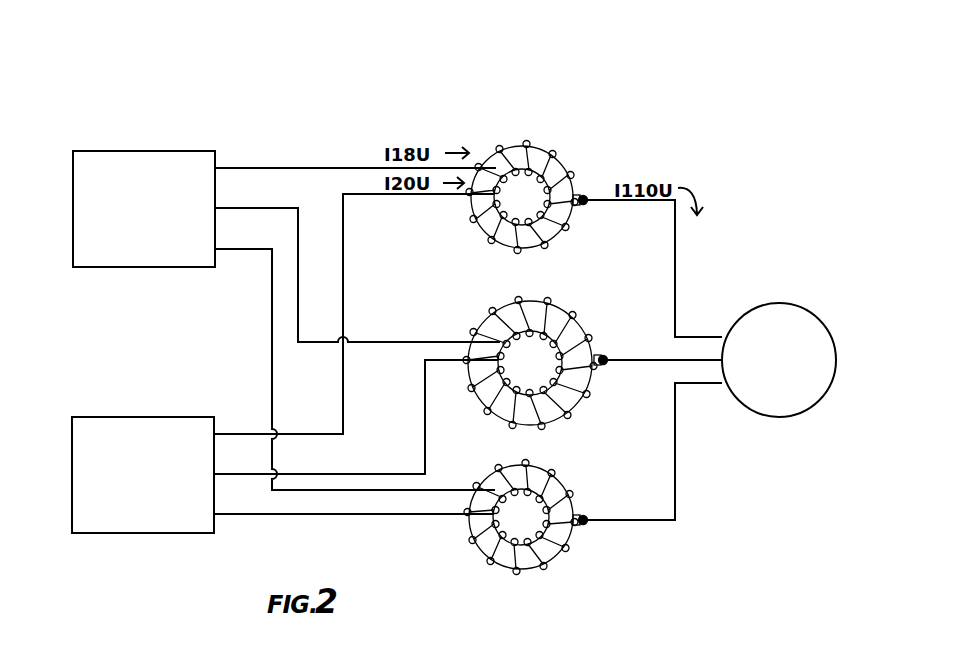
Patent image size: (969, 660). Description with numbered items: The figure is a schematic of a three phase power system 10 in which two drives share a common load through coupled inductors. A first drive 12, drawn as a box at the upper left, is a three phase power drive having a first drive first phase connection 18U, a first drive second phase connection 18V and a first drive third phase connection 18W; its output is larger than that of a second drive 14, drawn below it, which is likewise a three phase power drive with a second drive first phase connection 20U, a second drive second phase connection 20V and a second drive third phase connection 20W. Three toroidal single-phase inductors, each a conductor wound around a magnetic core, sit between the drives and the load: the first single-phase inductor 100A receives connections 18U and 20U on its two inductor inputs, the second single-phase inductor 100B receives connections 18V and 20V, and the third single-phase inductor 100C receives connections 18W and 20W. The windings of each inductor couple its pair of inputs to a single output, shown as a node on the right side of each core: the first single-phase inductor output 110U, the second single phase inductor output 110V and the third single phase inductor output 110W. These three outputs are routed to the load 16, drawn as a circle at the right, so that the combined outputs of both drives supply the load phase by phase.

The power system 10 is at (753, 140).
The first drive 12 is at (88, 151).
The second drive 14 is at (88, 417).
The load 16 is at (800, 303).
The first drive first phase connection 18U is at (336, 168).
The first drive second phase connection 18V is at (339, 270).
The first drive third phase connection 18W is at (333, 364).
The second drive first phase connection 20U is at (335, 319).
The second drive second phase connection 20V is at (338, 422).
The second drive third phase connection 20W is at (333, 514).
The first single-phase inductor 100A is at (467, 231).
The second single-phase inductor 100B is at (477, 308).
The third single-phase inductor 100C is at (467, 551).
The first single-phase inductor output 110U is at (585, 198).
The second single-phase inductor output 110V is at (605, 358).
The third single-phase inductor output 110W is at (586, 518).